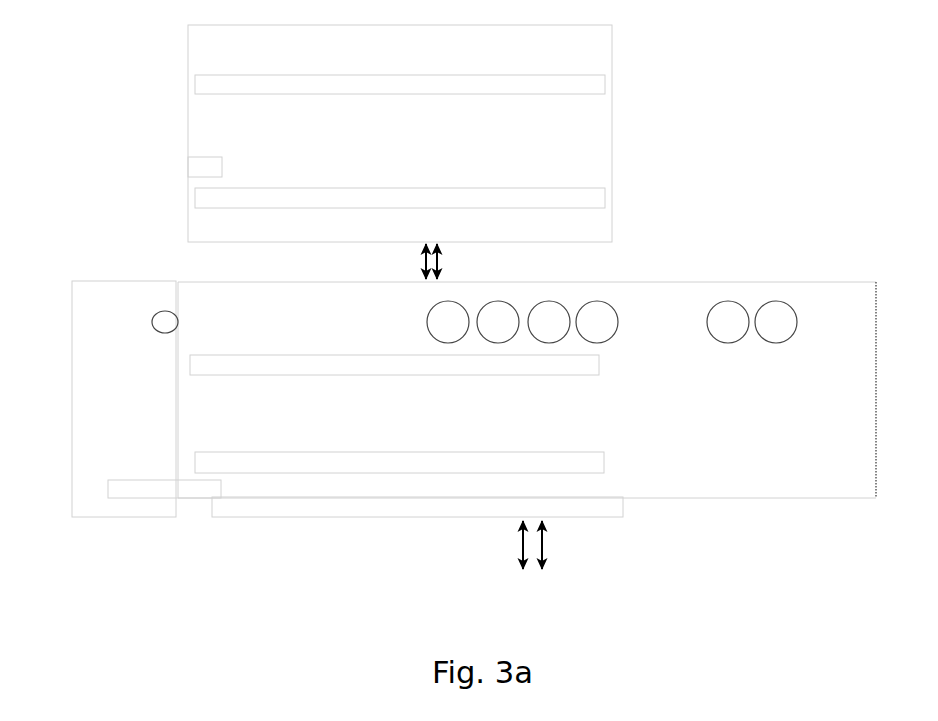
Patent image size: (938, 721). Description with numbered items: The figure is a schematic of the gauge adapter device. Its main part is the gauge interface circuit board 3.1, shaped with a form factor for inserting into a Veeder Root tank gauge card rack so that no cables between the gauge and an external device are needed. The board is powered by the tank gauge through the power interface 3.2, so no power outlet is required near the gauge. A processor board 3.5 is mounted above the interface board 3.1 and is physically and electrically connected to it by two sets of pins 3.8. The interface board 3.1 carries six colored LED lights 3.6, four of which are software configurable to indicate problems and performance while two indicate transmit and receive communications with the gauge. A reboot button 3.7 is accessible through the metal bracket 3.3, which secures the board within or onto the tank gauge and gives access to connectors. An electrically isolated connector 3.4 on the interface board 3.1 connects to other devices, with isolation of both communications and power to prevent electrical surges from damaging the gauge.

The gauge interface circuit board 3.1 is at (527, 390).
The power interface 3.2 is at (553, 546).
The metal bracket 3.3 is at (124, 399).
The electrically isolated connector 3.4 is at (164, 489).
The processor board 3.5 is at (400, 133).
The colored LED lights 3.6 is at (609, 302).
The reboot button 3.7 is at (160, 308).
The pins 3.8 is at (441, 263).